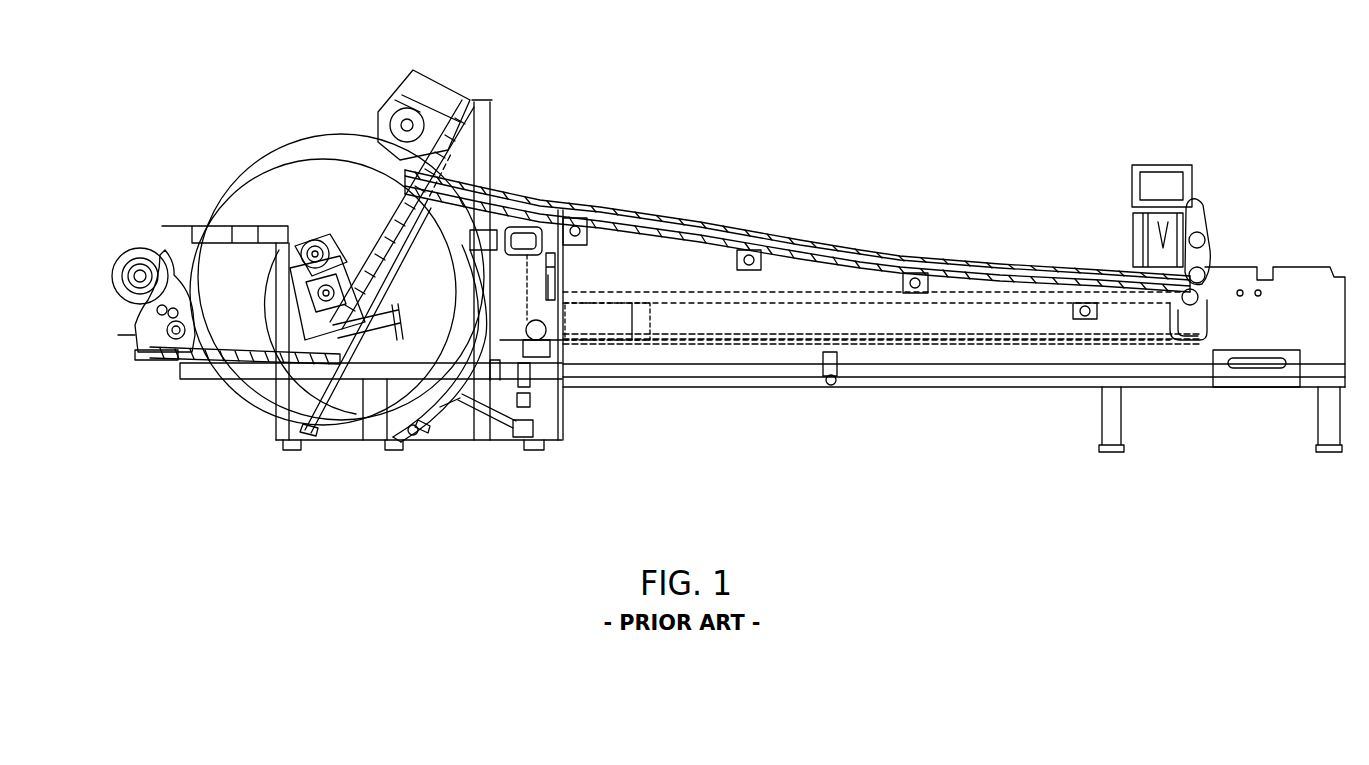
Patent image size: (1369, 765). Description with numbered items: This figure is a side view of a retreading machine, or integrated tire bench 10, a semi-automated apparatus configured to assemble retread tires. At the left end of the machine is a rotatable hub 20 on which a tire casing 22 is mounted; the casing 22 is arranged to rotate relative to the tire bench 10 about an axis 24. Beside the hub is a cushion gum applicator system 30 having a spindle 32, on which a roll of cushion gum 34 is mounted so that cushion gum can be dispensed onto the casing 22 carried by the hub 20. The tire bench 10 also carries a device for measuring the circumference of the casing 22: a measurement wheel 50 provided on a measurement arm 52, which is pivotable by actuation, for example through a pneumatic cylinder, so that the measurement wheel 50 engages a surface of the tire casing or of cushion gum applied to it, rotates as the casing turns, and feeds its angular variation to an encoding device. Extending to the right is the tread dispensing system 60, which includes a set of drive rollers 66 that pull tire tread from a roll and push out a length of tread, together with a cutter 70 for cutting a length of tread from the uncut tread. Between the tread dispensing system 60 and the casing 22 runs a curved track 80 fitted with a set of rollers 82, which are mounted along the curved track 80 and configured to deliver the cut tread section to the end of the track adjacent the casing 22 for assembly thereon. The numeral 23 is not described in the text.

The tire bench 10 is at (760, 128).
The rotatable hub 20 is at (340, 240).
The tire casing 22 is at (243, 262).
The inner wheel 23 is at (262, 262).
The axis 24 is at (258, 250).
The cushion gum applicator system 30 is at (153, 389).
The spindle 32 is at (145, 270).
The roll of cushion gum 34 is at (117, 258).
The measurement wheel 50 is at (490, 313).
The measurement arm 52 is at (440, 407).
The tread dispensing system 60 is at (1157, 143).
The drive rollers 66 is at (1212, 250).
The cutter 70 is at (1133, 238).
The curved track 80 is at (775, 257).
The rollers 82 is at (602, 205).